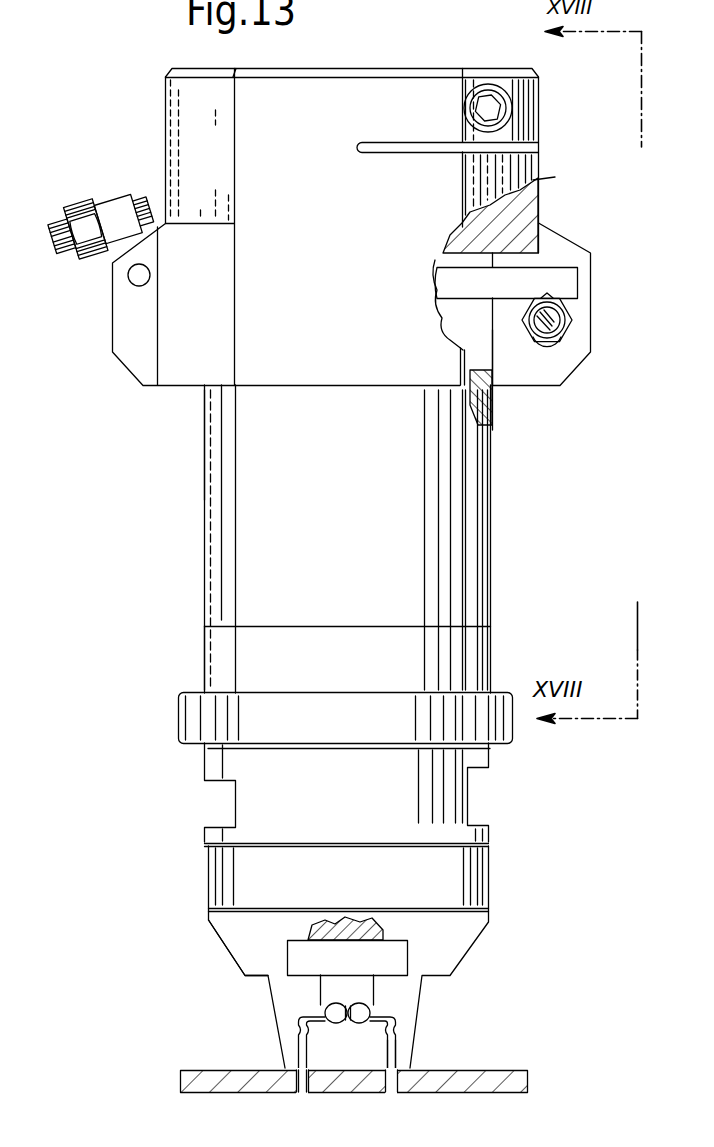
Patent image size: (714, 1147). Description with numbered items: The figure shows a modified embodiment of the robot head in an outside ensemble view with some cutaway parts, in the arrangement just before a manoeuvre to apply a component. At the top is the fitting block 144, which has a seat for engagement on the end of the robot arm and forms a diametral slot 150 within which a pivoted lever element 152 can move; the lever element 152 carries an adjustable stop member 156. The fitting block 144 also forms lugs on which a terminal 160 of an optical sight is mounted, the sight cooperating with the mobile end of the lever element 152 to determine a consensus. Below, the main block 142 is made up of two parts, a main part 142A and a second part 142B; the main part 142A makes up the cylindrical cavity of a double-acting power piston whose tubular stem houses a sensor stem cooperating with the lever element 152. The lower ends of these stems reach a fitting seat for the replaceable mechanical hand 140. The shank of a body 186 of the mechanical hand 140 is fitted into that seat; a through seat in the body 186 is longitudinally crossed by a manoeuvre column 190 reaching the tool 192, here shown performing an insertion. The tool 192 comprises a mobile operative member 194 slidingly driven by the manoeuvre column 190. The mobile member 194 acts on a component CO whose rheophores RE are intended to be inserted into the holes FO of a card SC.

The fitting block 144 is at (247, 191).
The adjustable stop member 156 is at (85, 213).
The diametral slot 150 is at (557, 372).
The lever element 152 is at (563, 283).
The terminal of an optical sight 160 is at (557, 335).
The main block 142 is at (503, 635).
The main part of the main block 142A is at (223, 450).
The part of the main block 142B is at (215, 642).
The body of the mechanical hand 186 is at (225, 770).
The mechanical hand 140 is at (498, 921).
The manoeuvre column 190 is at (347, 928).
The tool 192 is at (255, 958).
The mobile operative member 194 is at (398, 953).
The component CO is at (367, 1017).
The rheophores RE is at (395, 1053).
The card SC is at (227, 1075).
The holes FO is at (307, 1093).